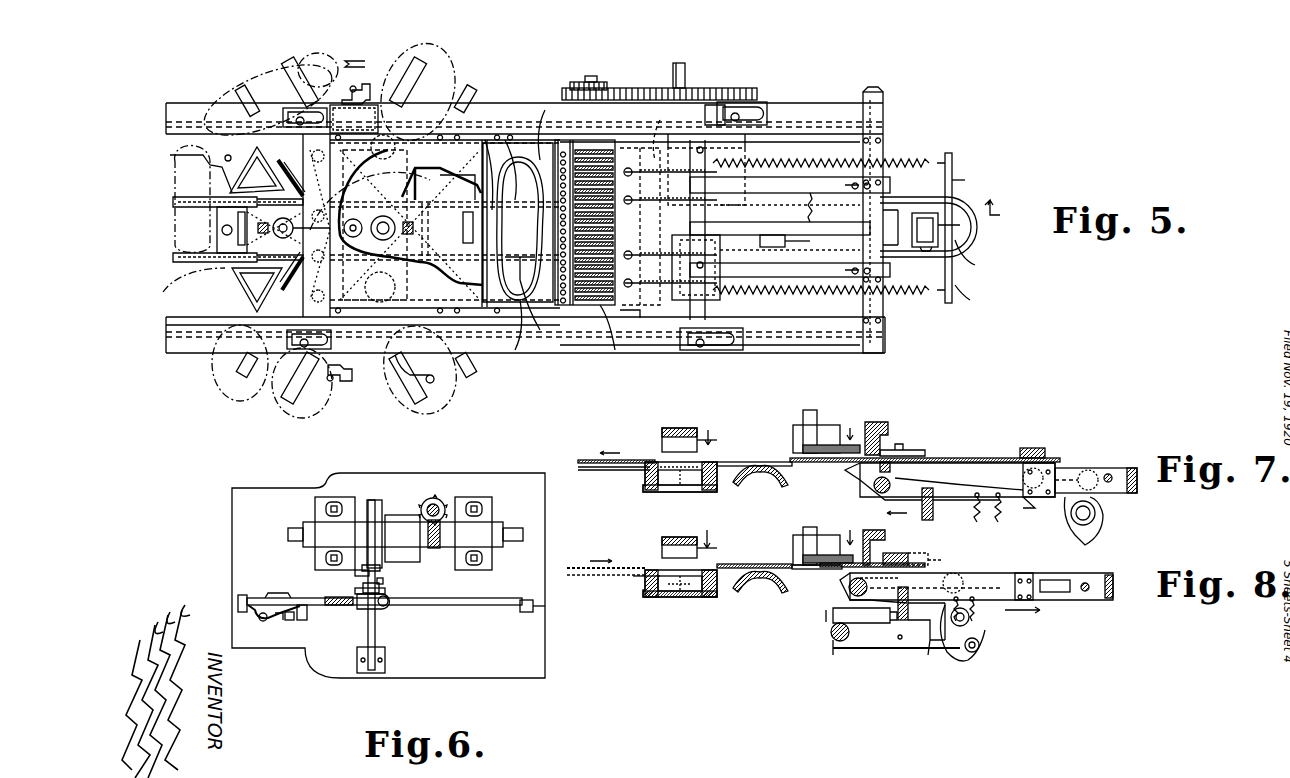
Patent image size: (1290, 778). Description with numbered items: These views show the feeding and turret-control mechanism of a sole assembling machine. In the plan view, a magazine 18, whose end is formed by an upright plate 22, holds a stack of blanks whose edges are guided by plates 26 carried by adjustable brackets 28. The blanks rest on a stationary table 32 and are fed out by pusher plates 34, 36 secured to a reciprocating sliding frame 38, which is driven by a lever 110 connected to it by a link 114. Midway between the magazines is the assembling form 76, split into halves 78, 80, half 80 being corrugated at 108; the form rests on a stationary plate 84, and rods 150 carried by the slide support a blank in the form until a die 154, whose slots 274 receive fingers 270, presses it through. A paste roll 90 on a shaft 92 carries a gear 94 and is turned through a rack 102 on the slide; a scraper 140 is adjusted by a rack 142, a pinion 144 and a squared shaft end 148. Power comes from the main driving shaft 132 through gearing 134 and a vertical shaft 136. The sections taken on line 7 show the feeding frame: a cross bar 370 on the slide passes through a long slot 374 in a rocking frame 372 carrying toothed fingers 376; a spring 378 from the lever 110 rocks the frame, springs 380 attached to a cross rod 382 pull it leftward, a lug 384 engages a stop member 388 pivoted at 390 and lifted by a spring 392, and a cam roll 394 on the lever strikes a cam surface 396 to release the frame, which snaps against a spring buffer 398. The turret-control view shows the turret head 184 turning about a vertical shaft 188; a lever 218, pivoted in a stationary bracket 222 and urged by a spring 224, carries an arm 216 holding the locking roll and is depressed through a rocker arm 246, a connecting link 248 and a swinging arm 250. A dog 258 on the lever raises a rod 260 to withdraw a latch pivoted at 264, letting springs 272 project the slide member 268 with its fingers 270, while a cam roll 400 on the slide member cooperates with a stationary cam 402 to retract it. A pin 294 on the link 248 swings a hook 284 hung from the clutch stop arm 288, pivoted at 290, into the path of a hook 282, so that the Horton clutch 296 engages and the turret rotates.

In FIG. 5, the section line 7 is at (992, 199).
In FIG. 7, the blank magazine 18 is at (809, 410).
In FIG. 8, the blank magazine 18 is at (814, 535).
In FIG. 7, the upright plate 22 is at (830, 425).
In FIG. 8, the upright plate 22 is at (823, 547).
In FIG. 7, the guide plate 26 is at (872, 425).
In FIG. 8, the guide plate 26 is at (885, 540).
In FIG. 5, the adjustable bracket 28 is at (305, 108).
In FIG. 7, the adjustable bracket 28 is at (910, 458).
In FIG. 5, the stationary table 32 is at (625, 305).
In FIG. 7, the stationary table 32 is at (780, 462).
In FIG. 8, the stationary table 32 is at (785, 565).
In FIG. 5, the pusher plate 34 is at (520, 353).
In FIG. 7, the pusher plate 34 is at (592, 460).
In FIG. 8, the pusher plate 34 is at (578, 568).
In FIG. 5, the pusher plate 36 is at (762, 165).
In FIG. 7, the pusher plate 36 is at (930, 463).
In FIG. 8, the pusher plate 36 is at (733, 564).
In FIG. 5, the sliding frame 38 is at (833, 108).
In FIG. 7, the sliding frame 38 is at (1040, 448).
In FIG. 8, the sliding frame 38 is at (908, 558).
In FIG. 5, the blank assembling form 76 is at (545, 320).
In FIG. 7, the blank assembling form 76 is at (690, 485).
In FIG. 8, the blank assembling form 76 is at (698, 595).
In FIG. 5, the form half 78 is at (490, 140).
In FIG. 5, the form half 80 is at (505, 140).
In FIG. 7, the stationary plate 84 is at (648, 488).
In FIG. 8, the stationary plate 84 is at (648, 597).
In FIG. 5, the paste roll 90 is at (595, 300).
In FIG. 7, the paste roll 90 is at (775, 480).
In FIG. 8, the paste roll 90 is at (750, 590).
In FIG. 5, the paste roll shaft 92 is at (595, 76).
In FIG. 5, the gear 94 is at (632, 88).
In FIG. 5, the rack 102 is at (700, 105).
In FIG. 5, the corrugations 108 is at (545, 110).
In FIG. 8, the lever 110 is at (963, 704).
In FIG. 5, the link 114 is at (915, 247).
In FIG. 6, the main driving shaft 132 is at (512, 528).
In FIG. 6, the gearing 134 is at (437, 548).
In FIG. 6, the vertical shaft 136 is at (440, 503).
In FIG. 5, the scraper 140 is at (660, 300).
In FIG. 5, the scraper rack 142 is at (690, 305).
In FIG. 5, the pinion 144 is at (672, 305).
In FIG. 5, the squared shaft end 148 is at (685, 70).
In FIG. 5, the horizontal rods 150 is at (519, 252).
In FIG. 7, the horizontal rods 150 is at (630, 470).
In FIG. 8, the horizontal rods 150 is at (633, 578).
In FIG. 7, the die 154 is at (695, 428).
In FIG. 8, the die 154 is at (675, 537).
In FIG. 5, the turret head 184 is at (170, 158).
In FIG. 5, the vertical shaft 188 is at (354, 119).
In FIG. 6, the upwardly projecting arm 216 is at (292, 620).
In FIG. 6, the lever 218 is at (286, 622).
In FIG. 6, the stationary bracket 222 is at (300, 620).
In FIG. 6, the spring 224 is at (282, 621).
In FIG. 6, the rocker arm 246 is at (545, 606).
In FIG. 6, the connecting link 248 is at (520, 612).
In FIG. 6, the swinging arm 250 is at (385, 606).
In FIG. 6, the dog 258 is at (243, 595).
In FIG. 5, the spring depressed rod 260 is at (520, 228).
In FIG. 5, the latch pivot 264 is at (465, 185).
In FIG. 5, the slide member 268 is at (192, 240).
In FIG. 5, the fingers 270 is at (175, 253).
In FIG. 5, the springs 272 is at (158, 295).
In FIG. 7, the slots 274 is at (662, 440).
In FIG. 8, the slots 274 is at (662, 550).
In FIG. 6, the hook 282 is at (383, 581).
In FIG. 6, the co-operating hook 284 is at (355, 573).
In FIG. 6, the clutch stop arm 288 is at (368, 640).
In FIG. 6, the stop arm pivot 290 is at (385, 660).
In FIG. 6, the pin 294 is at (355, 591).
In FIG. 6, the Horton clutch 296 is at (395, 525).
In FIG. 5, the cross bar 370 is at (907, 210).
In FIG. 7, the cross bar 370 is at (1037, 497).
In FIG. 8, the cross bar 370 is at (861, 616).
In FIG. 5, the rocking frame 372 is at (962, 257).
In FIG. 7, the rocking frame 372 is at (1118, 468).
In FIG. 8, the rocking frame 372 is at (1085, 600).
In FIG. 7, the long slot 374 is at (980, 485).
In FIG. 8, the long slot 374 is at (1003, 590).
In FIG. 5, the toothed fingers 376 is at (660, 120).
In FIG. 7, the toothed fingers 376 is at (838, 478).
In FIG. 8, the toothed fingers 376 is at (820, 587).
In FIG. 7, the spring 378 is at (1001, 522).
In FIG. 8, the spring 378 is at (975, 623).
In FIG. 5, the springs 380 is at (920, 163).
In FIG. 5, the cross rod 382 is at (965, 180).
In FIG. 7, the cross rod 382 is at (1112, 482).
In FIG. 8, the cross rod 382 is at (1090, 585).
In FIG. 5, the lug 384 is at (768, 178).
In FIG. 7, the lug 384 is at (933, 512).
In FIG. 8, the lug 384 is at (902, 625).
In FIG. 5, the stop member 388 is at (815, 290).
In FIG. 8, the stop member 388 is at (920, 640).
In FIG. 8, the stationary pivot 390 is at (833, 650).
In FIG. 5, the spring 392 is at (812, 190).
In FIG. 7, the spring 392 is at (975, 522).
In FIG. 8, the spring 392 is at (978, 655).
In FIG. 5, the cam roll 394 is at (962, 297).
In FIG. 7, the cam roll 394 is at (1103, 518).
In FIG. 8, the cam roll 394 is at (935, 648).
In FIG. 5, the cam surface 396 is at (812, 241).
In FIG. 8, the cam surface 396 is at (980, 643).
In FIG. 8, the spring buffer 398 is at (845, 640).
In FIG. 5, the cam roll 400 is at (267, 282).
In FIG. 5, the stationary cam 402 is at (405, 370).